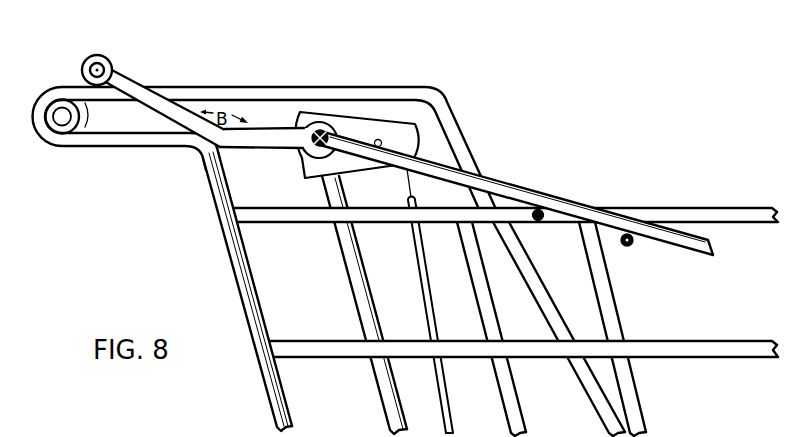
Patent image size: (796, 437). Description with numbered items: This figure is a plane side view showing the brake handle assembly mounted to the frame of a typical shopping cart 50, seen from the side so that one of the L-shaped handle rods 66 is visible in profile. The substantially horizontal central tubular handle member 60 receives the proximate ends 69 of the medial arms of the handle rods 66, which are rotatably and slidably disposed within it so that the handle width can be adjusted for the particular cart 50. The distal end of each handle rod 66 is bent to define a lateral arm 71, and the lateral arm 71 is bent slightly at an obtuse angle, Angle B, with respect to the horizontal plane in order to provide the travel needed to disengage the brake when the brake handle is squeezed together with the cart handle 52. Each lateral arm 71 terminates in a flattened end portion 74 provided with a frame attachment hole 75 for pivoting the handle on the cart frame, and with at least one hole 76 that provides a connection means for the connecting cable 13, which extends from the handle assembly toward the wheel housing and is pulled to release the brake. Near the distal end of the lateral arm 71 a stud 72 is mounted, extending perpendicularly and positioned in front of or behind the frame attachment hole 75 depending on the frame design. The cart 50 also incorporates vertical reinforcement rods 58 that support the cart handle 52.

The connecting cable 13 is at (488, 170).
The shopping cart 50 is at (695, 337).
The cart handle 52 is at (60, 118).
The vertical reinforcement rods 58 is at (353, 267).
The central tubular handle member 60 is at (107, 53).
The handle rods 66 is at (150, 98).
The proximate ends 69 is at (723, 423).
The lateral arms 71 is at (253, 138).
The stud 72 is at (381, 140).
The flattened end portion 74 is at (367, 132).
The frame attachment hole 75 is at (323, 133).
The hole 76 is at (407, 143).